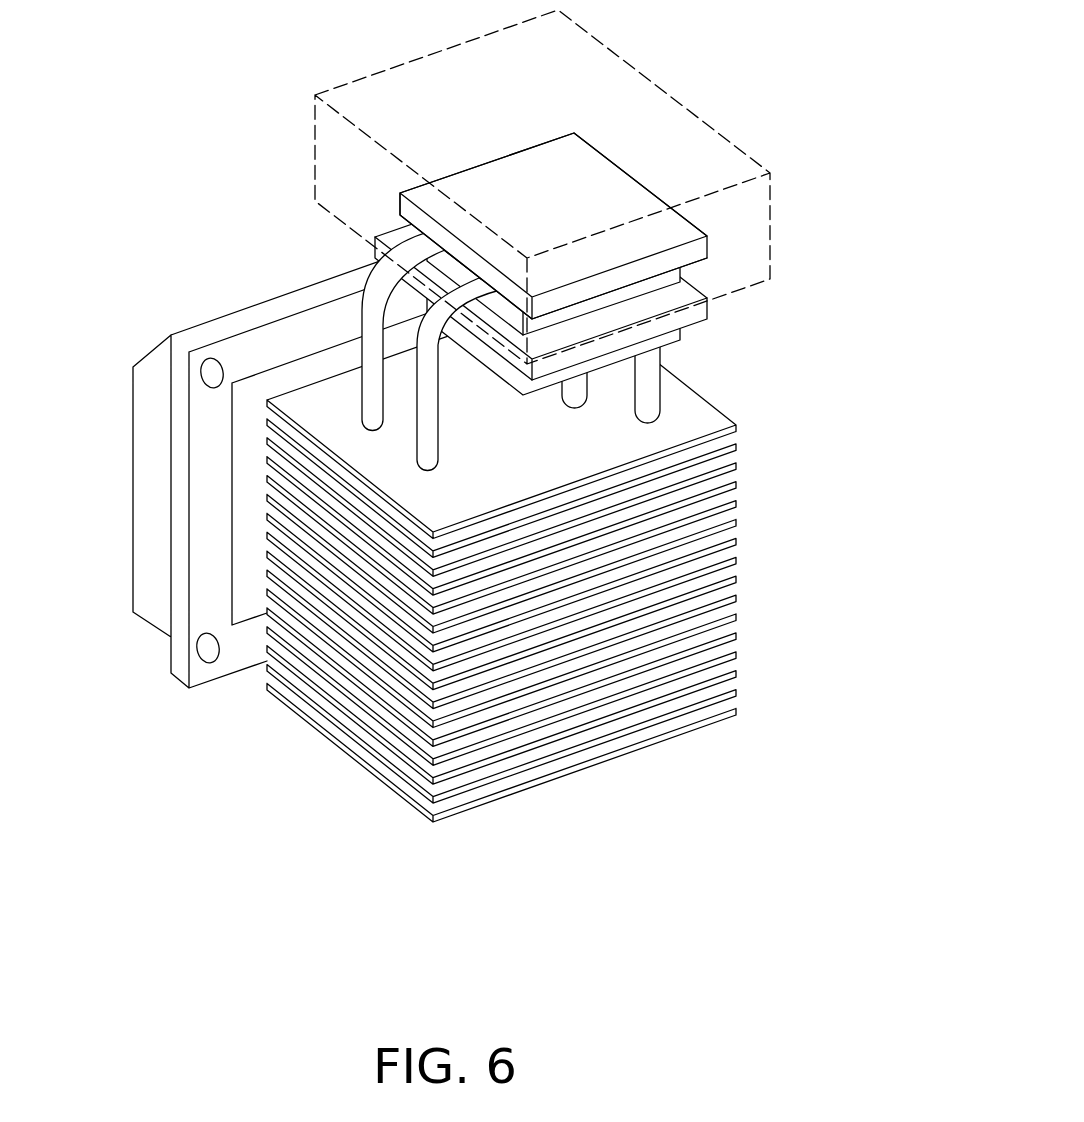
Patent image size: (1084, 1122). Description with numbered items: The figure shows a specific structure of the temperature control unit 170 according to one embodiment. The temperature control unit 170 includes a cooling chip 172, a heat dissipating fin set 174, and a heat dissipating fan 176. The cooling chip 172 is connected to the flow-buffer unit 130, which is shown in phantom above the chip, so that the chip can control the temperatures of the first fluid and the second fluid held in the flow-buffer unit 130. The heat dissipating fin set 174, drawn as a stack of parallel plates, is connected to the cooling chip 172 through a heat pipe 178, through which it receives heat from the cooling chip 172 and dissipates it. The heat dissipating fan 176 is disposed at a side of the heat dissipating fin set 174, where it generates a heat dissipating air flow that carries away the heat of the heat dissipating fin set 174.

The flow-buffer unit 130 is at (630, 60).
The temperature control unit 170 is at (767, 788).
The cooling chip 172 is at (623, 190).
The heat dissipating fin set 174 is at (760, 425).
The heat dissipating fan 176 is at (150, 430).
The heat pipe 178 is at (611, 379).